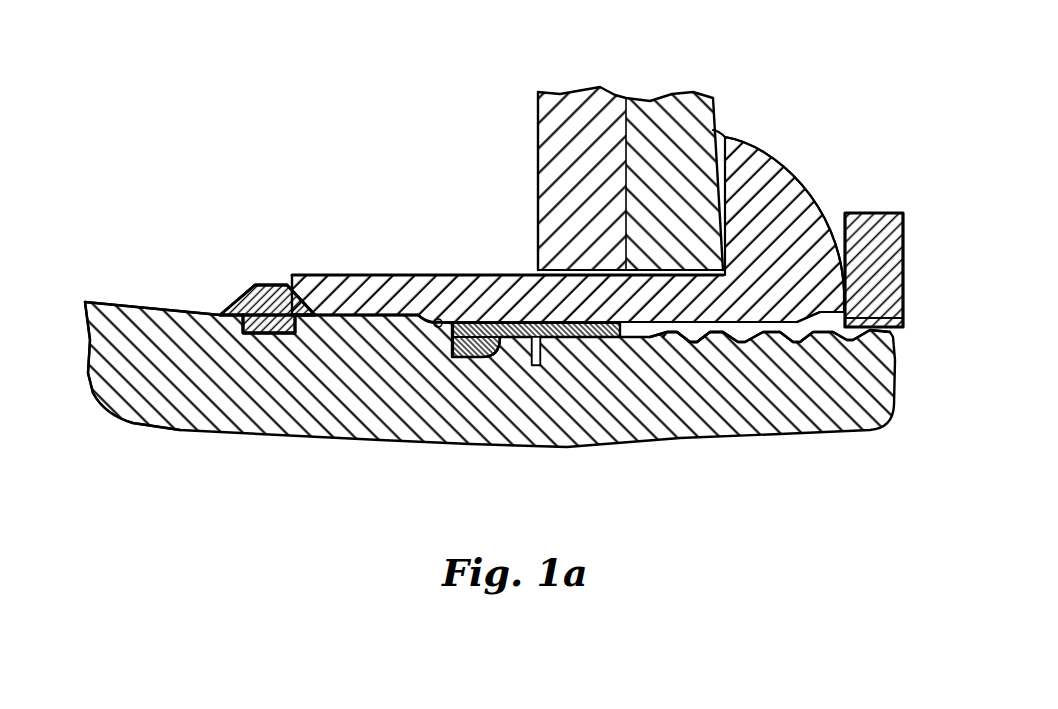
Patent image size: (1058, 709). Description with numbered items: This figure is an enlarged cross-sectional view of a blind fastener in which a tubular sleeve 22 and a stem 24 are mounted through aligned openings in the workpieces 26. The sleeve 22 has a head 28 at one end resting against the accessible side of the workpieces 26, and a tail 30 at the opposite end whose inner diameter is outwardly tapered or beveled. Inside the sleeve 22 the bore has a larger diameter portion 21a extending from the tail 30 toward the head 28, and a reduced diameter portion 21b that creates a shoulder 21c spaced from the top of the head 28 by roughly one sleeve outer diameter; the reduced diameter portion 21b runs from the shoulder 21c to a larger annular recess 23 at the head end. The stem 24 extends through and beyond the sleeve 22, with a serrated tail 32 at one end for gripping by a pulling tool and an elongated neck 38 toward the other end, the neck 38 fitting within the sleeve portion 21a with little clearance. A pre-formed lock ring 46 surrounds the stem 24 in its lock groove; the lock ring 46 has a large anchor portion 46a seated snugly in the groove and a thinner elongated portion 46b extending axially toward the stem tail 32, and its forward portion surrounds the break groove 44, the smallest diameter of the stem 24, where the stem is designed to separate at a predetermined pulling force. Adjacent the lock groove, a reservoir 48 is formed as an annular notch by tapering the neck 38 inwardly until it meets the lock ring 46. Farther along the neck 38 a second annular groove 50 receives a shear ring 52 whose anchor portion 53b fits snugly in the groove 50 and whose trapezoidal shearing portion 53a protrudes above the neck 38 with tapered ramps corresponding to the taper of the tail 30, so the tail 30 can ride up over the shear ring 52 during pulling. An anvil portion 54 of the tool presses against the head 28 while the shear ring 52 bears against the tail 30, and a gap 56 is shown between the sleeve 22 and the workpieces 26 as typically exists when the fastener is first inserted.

The larger diameter portion 21a is at (435, 318).
The reduced diameter portion 21b is at (697, 337).
The shoulder 21c is at (567, 318).
The tubular sleeve 22 is at (748, 122).
The annular recess 23 is at (823, 313).
The stem 24 is at (836, 445).
The workpieces 26 is at (643, 97).
The head 28 is at (803, 187).
The tail 30 is at (313, 273).
The tail 32 is at (878, 349).
The neck 38 is at (128, 410).
The break groove 44 is at (550, 340).
The lock ring 46 is at (471, 372).
The anchor portion 46a is at (510, 345).
The end of sealing band 46b is at (612, 340).
The reservoir 48 is at (433, 323).
The second annular groove 50 is at (218, 314).
The shear ring 52 is at (219, 247).
The shearing portion 53a is at (270, 287).
The anchor portion 53b is at (255, 335).
The anvil portion 54 is at (903, 262).
The gap 56 is at (537, 272).